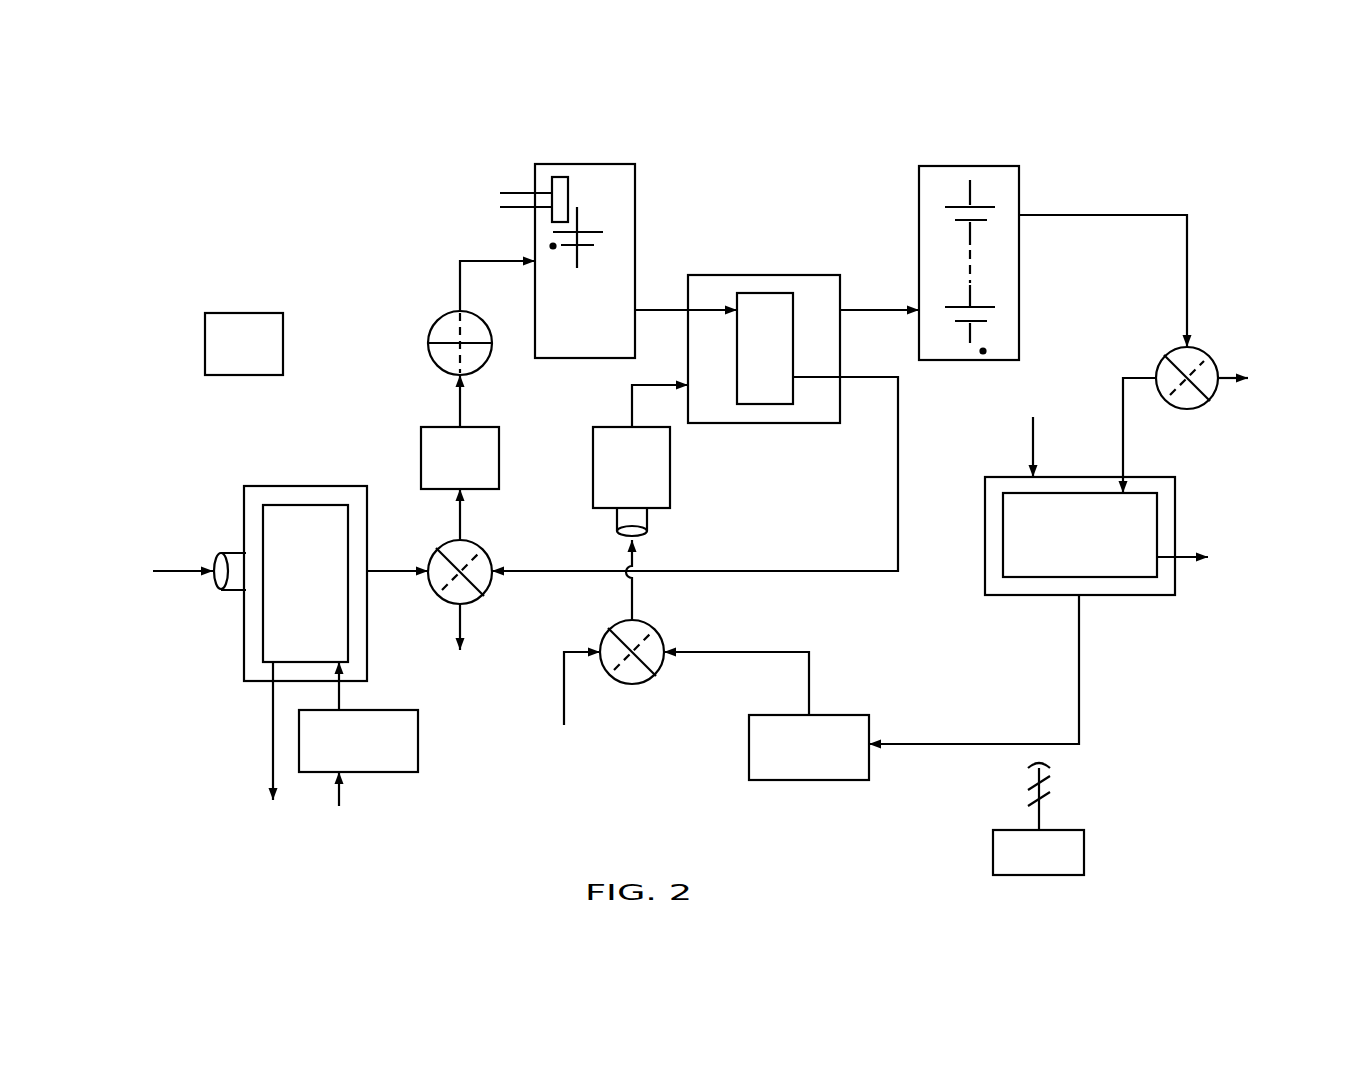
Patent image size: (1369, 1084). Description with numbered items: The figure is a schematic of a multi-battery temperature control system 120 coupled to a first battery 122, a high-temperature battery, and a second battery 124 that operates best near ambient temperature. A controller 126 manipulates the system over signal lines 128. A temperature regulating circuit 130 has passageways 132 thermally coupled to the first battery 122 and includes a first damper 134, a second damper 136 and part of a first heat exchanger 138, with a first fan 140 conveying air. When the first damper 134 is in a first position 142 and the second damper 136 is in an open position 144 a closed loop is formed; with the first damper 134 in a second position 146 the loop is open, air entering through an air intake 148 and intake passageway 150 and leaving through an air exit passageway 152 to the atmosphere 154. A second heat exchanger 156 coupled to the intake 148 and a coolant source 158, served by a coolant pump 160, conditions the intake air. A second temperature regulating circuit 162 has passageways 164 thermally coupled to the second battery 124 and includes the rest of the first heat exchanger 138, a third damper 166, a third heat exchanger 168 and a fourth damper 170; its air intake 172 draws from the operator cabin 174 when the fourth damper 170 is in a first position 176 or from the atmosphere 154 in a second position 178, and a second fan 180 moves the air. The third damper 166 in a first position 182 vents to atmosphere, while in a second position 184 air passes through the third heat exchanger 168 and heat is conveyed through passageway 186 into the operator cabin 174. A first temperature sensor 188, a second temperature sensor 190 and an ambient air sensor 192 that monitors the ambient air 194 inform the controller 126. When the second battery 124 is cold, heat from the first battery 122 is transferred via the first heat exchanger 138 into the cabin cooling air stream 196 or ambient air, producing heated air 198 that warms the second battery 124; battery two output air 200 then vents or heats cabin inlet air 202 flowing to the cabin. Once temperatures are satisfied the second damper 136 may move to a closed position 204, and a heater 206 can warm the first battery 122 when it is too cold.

The multi-battery temperature control system 120 is at (425, 140).
The first battery 122 is at (598, 164).
The second battery 124 is at (933, 166).
The controller 126 is at (1022, 867).
The signal lines 128 is at (1045, 818).
The temperature regulating circuit 130 is at (515, 778).
The passageways 132 is at (460, 268).
The first damper 134 is at (480, 594).
The second damper 136 is at (483, 365).
The first heat exchanger 138 is at (760, 423).
The first fan 140 is at (421, 455).
The first position 142 is at (478, 548).
The open position 144 is at (458, 355).
The second position 146 is at (448, 598).
The air intake 148 is at (235, 553).
The intake passageway 150 is at (398, 500).
The air exit passageway 152 is at (486, 626).
The atmosphere 154 is at (446, 681).
The second heat exchanger 156 is at (305, 486).
The coolant source 158 is at (366, 702).
The coolant pump 160 is at (410, 712).
The temperature regulating circuit 162 is at (848, 185).
The passageways 164 is at (886, 310).
The third damper 166 is at (1185, 409).
The third heat exchanger 168 is at (1158, 600).
The fourth damper 170 is at (620, 678).
The air intake 172 is at (617, 526).
The operator cabin 174 is at (808, 780).
The first position 176 is at (632, 684).
The second position 178 is at (648, 632).
The second fan 180 is at (593, 480).
The first position 182 is at (1166, 367).
The second position 184 is at (1200, 360).
The passageway 186 is at (1085, 745).
The first temperature sensor 188 is at (553, 246).
The second temperature sensor 190 is at (983, 351).
The ambient air sensor 192 is at (227, 358).
The ambient air 194 is at (181, 598).
The cabin cooling air stream 196 is at (845, 693).
The heated air 198 is at (884, 334).
The battery two output air 200 is at (1112, 226).
The cabin inlet air 202 is at (1016, 413).
The closed position 204 is at (442, 340).
The heater 206 is at (558, 177).